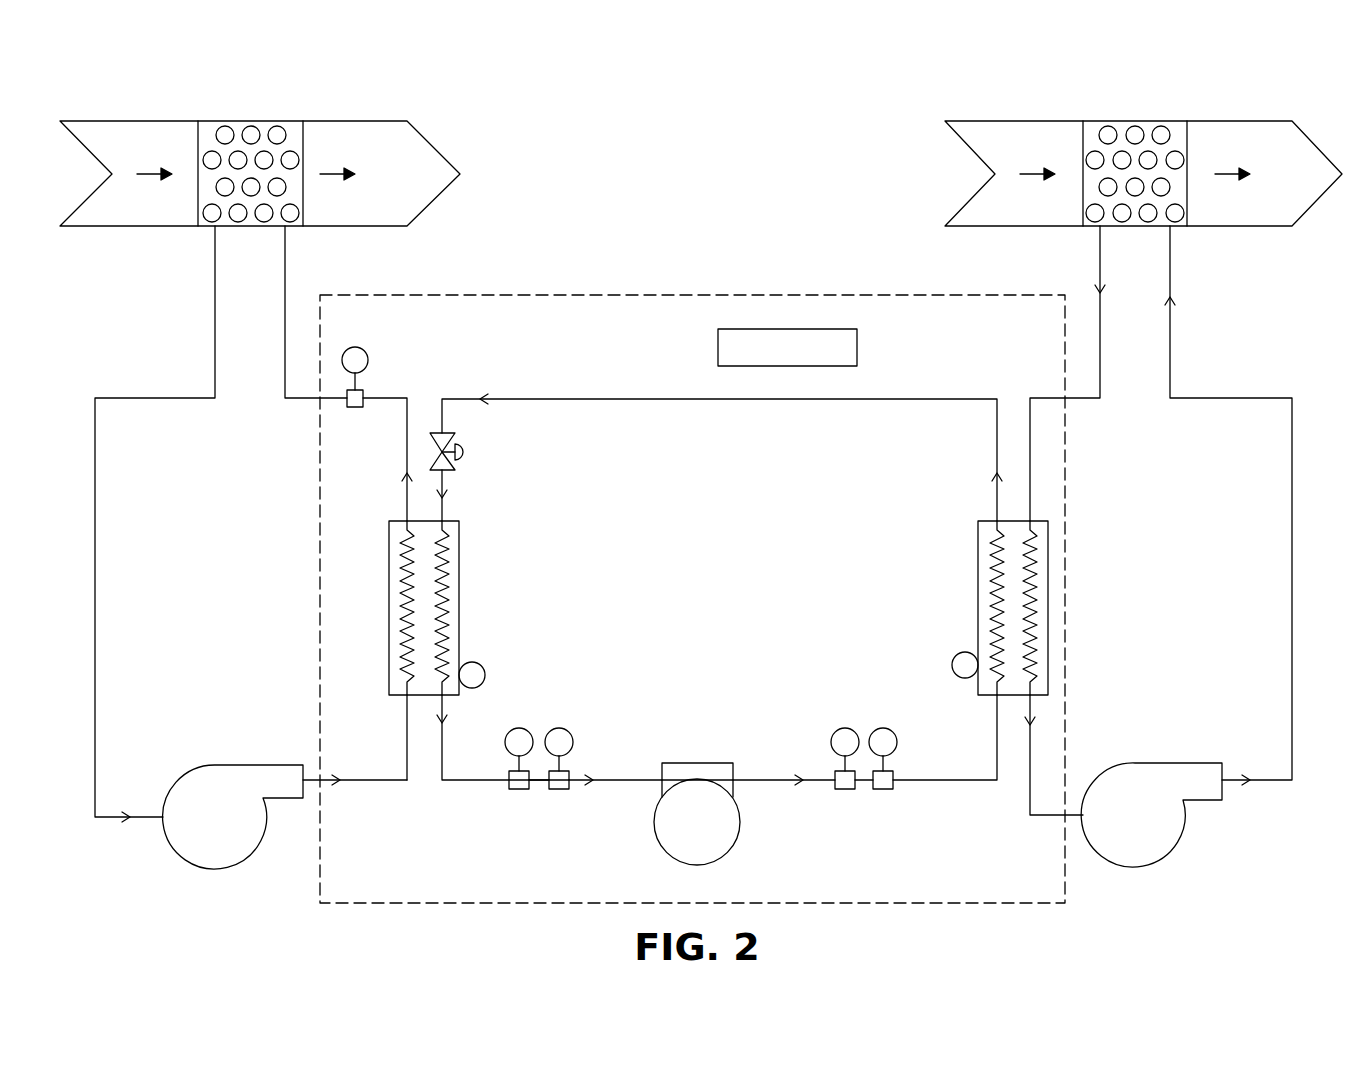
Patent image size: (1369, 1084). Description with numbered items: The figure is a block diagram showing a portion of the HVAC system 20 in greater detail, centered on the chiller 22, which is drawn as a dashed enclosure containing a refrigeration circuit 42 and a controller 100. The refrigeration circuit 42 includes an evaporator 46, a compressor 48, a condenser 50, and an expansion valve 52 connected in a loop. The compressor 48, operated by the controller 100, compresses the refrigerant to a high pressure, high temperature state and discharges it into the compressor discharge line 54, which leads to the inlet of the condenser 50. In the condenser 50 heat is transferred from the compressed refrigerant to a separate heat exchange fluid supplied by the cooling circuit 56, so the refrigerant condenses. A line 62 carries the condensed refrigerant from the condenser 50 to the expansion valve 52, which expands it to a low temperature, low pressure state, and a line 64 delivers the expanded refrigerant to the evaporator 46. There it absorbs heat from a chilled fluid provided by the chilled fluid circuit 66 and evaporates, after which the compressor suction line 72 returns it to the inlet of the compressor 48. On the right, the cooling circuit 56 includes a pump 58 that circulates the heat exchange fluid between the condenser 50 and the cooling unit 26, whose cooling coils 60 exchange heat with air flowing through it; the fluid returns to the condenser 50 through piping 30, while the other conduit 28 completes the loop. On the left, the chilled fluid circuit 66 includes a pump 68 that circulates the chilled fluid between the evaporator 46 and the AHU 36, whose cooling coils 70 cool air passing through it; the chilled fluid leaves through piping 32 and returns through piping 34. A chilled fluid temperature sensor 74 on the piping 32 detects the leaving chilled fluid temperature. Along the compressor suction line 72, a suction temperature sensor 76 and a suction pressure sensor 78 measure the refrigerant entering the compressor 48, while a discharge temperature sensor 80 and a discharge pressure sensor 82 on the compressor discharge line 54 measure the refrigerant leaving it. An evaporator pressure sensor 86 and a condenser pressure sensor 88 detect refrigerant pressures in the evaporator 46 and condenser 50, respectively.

The HVAC system 20 is at (490, 66).
The chiller 22 is at (530, 314).
The cooling unit 26 is at (1032, 132).
The cooling fluid return conduit 28 is at (1170, 275).
The piping 30 is at (1100, 264).
The piping 32 is at (285, 273).
The piping 34 is at (215, 300).
The AHU 36 is at (130, 132).
The refrigeration circuit 42 is at (718, 627).
The evaporator 46 is at (447, 556).
The compressor 48 is at (719, 752).
The condenser 50 is at (988, 563).
The expansion valve 52 is at (463, 452).
The compressor discharge line 54 is at (770, 786).
The cooling circuit 56 is at (1158, 562).
The pump 58 is at (1110, 781).
The cooling coils 60 is at (1122, 213).
The line 62 is at (545, 399).
The line 64 is at (442, 500).
The chilled fluid circuit 66 is at (242, 562).
The pump 68 is at (192, 783).
The cooling coils 70 is at (238, 213).
The compressor suction line 72 is at (458, 786).
The chilled fluid temperature sensor 74 is at (368, 360).
The suction temperature sensor 76 is at (518, 729).
The suction pressure sensor 78 is at (560, 729).
The discharge temperature sensor 80 is at (845, 729).
The discharge pressure sensor 82 is at (885, 729).
The evaporator pressure sensor 86 is at (485, 672).
The condenser pressure sensor 88 is at (953, 657).
The controller 100 is at (848, 340).